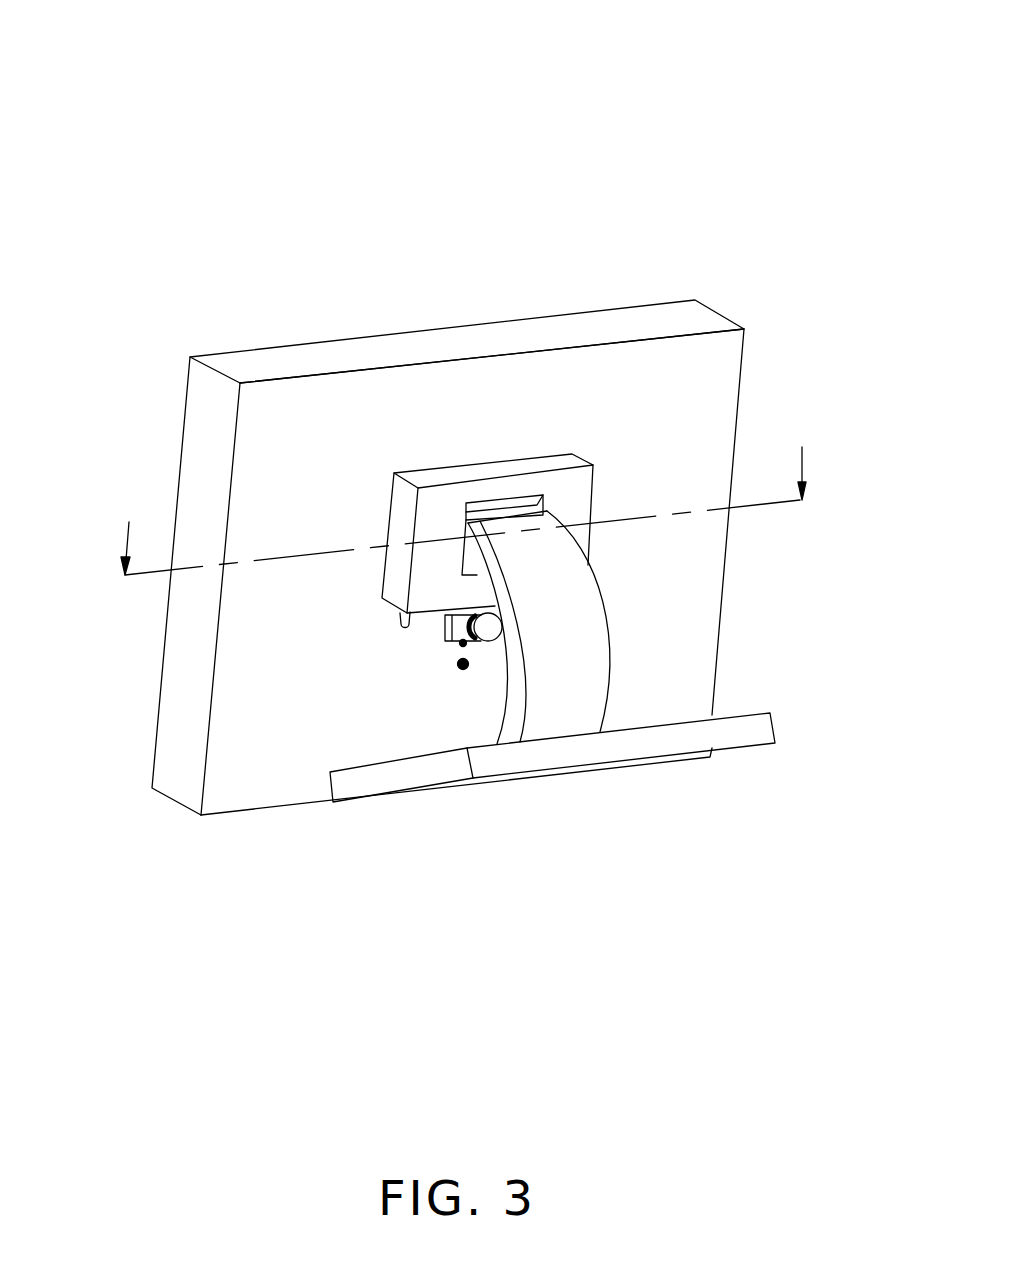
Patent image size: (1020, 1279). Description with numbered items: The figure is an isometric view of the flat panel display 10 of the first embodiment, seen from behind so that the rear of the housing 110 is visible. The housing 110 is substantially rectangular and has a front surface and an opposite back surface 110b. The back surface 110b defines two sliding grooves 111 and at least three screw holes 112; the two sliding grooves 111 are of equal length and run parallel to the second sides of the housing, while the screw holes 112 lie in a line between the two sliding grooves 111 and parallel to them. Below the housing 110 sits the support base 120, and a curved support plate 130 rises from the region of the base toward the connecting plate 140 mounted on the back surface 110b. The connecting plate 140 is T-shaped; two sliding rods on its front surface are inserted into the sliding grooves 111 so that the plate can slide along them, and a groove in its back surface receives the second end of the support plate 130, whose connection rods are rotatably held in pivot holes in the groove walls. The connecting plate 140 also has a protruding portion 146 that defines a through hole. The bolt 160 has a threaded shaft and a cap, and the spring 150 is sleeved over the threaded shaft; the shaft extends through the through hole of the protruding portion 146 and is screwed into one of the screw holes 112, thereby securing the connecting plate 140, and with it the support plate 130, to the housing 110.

The flat panel display 10 is at (454, 44).
The housing 110 is at (462, 342).
The back surface 110b is at (320, 403).
The sliding groove 111 is at (400, 625).
The screw hole 112 is at (468, 672).
The support base 120 is at (743, 730).
The support plate 130 is at (587, 618).
The connecting plate 140 is at (547, 463).
The protruding portion 146 is at (460, 642).
The spring 150 is at (460, 633).
The bolt 160 is at (497, 635).